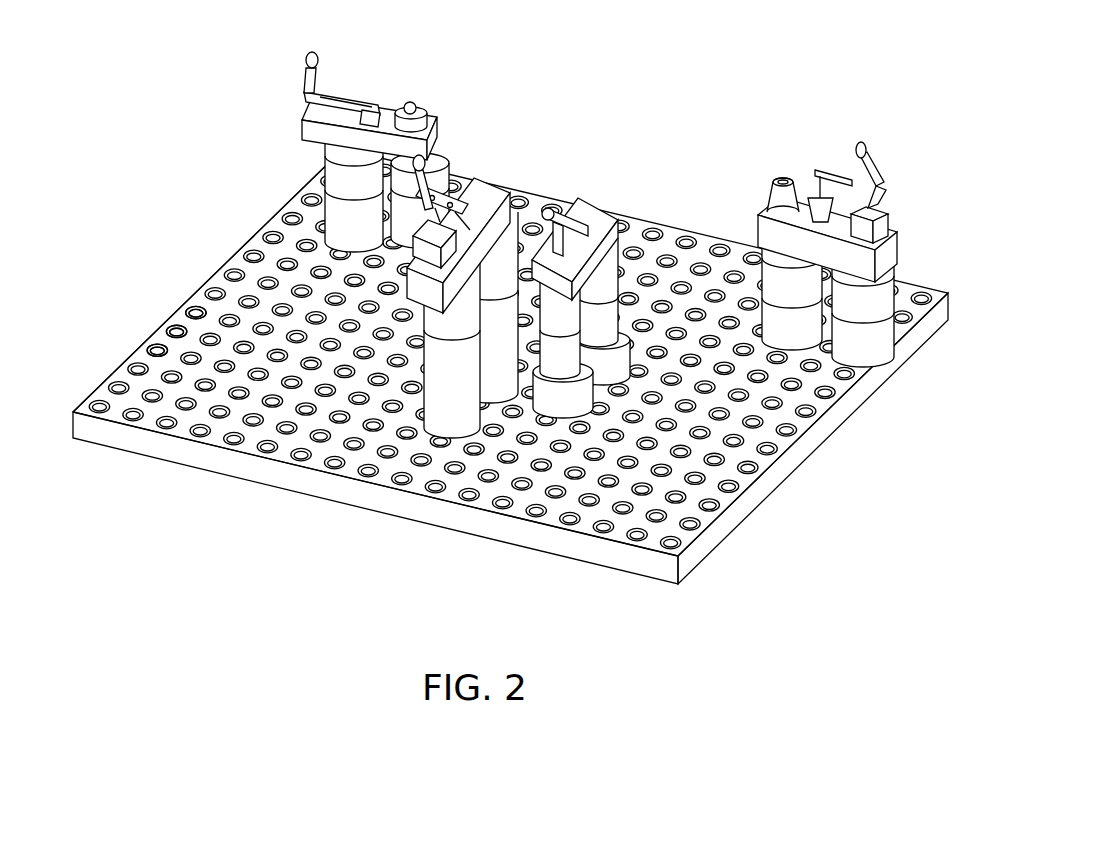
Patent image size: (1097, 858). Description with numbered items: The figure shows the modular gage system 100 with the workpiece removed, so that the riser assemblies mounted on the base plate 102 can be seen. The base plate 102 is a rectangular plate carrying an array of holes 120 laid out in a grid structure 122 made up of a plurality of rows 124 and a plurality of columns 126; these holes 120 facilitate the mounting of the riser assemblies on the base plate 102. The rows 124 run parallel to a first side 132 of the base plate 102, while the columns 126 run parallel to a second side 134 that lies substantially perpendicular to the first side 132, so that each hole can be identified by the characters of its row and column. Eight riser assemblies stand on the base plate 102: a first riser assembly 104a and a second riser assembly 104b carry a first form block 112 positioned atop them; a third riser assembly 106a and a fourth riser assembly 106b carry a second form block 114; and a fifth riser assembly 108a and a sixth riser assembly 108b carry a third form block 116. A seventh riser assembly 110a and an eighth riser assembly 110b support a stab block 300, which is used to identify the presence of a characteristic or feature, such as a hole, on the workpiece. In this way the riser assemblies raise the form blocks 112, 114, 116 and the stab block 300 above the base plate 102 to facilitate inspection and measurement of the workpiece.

The modular gage system 100 is at (504, 314).
The base plate 102 is at (496, 366).
The first riser assembly 104a is at (454, 412).
The second riser assembly 104b is at (505, 378).
The third riser assembly 106a is at (327, 176).
The fourth riser assembly 106b is at (392, 213).
The fifth riser assembly 108a is at (888, 322).
The sixth riser assembly 108b is at (748, 238).
The seventh riser assembly 110a is at (567, 352).
The eighth riser assembly 110b is at (607, 313).
The first form block 112 is at (427, 292).
The second form block 114 is at (303, 130).
The third form block 116 is at (910, 228).
The holes 120 is at (560, 203).
The grid structure 122 is at (118, 405).
The rows 124 is at (195, 438).
The columns 126 is at (149, 348).
The first side 132 is at (207, 279).
The second side 134 is at (307, 485).
The stab block 300 is at (598, 220).